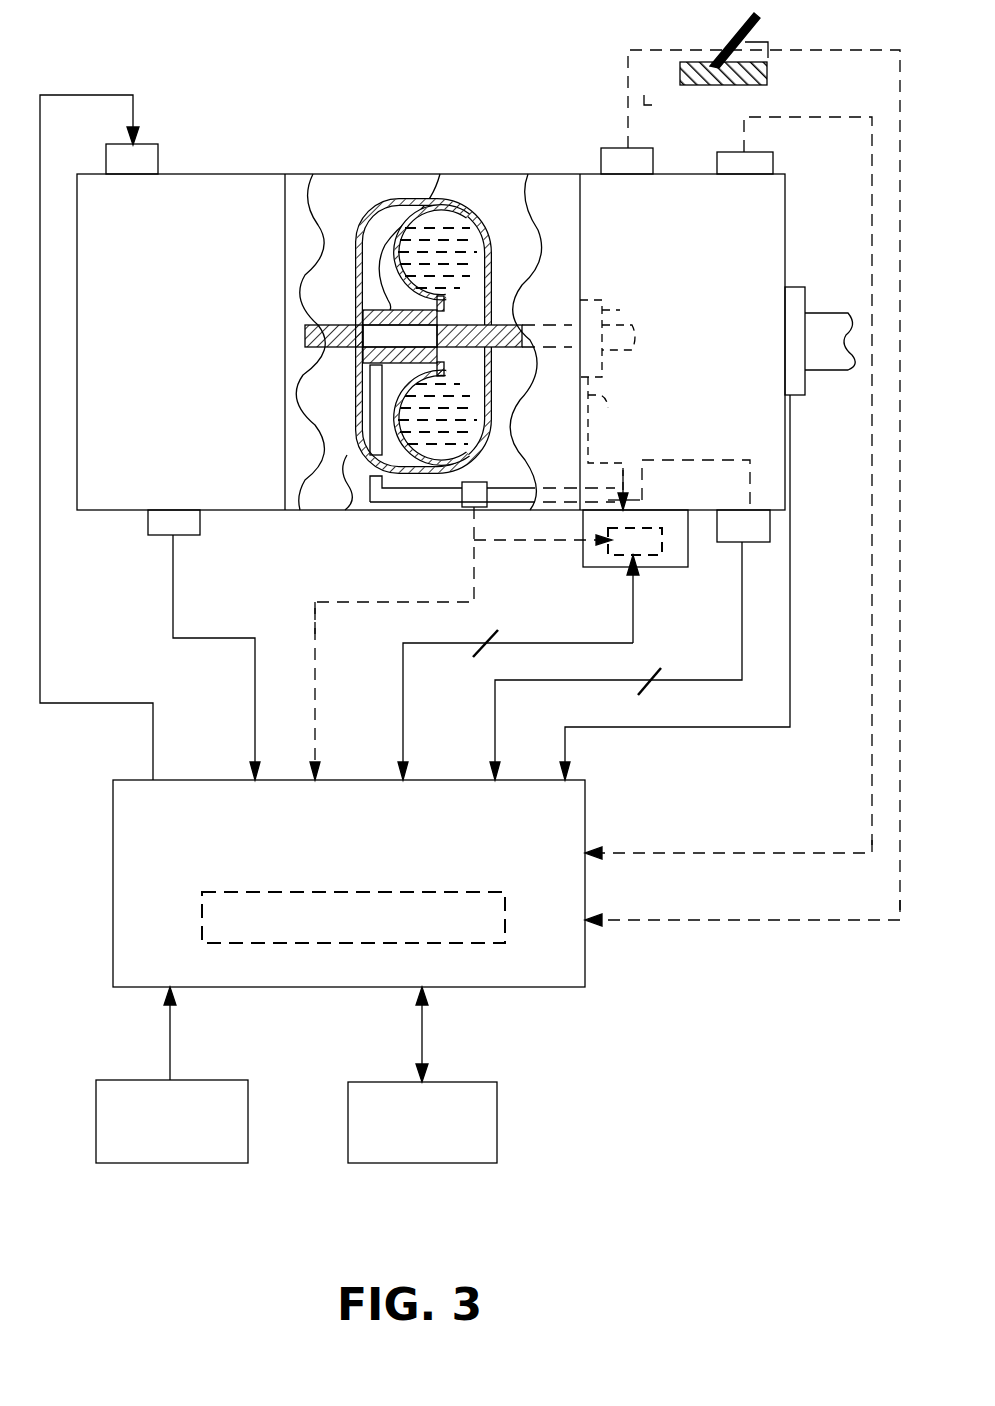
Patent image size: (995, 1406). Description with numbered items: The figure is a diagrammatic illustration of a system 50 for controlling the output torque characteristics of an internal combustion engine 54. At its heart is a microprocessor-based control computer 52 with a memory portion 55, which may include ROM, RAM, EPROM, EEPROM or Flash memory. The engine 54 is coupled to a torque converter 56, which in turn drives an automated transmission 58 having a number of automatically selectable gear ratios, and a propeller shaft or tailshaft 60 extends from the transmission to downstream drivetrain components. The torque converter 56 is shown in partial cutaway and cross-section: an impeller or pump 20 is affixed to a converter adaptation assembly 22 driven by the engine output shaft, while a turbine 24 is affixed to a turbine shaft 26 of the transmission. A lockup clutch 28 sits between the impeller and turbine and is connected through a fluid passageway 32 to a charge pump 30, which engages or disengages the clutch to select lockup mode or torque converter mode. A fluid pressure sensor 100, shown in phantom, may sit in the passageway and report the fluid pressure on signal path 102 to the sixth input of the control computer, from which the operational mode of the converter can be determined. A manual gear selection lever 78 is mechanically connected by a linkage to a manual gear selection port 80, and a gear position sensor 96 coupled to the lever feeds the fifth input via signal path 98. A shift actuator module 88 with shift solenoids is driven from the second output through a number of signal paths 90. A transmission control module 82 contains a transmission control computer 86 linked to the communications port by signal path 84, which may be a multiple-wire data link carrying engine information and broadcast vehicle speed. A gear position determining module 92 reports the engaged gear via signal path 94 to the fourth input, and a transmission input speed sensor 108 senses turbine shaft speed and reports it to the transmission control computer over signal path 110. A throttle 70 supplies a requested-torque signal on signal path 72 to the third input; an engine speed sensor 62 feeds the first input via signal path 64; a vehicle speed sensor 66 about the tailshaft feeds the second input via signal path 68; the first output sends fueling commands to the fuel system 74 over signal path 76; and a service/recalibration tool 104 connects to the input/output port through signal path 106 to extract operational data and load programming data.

The impeller or pump 20 is at (348, 511).
The converter adaptation assembly 22 is at (343, 325).
The turbine 24 is at (407, 200).
The turbine shaft 26 is at (523, 325).
The lockup clutch 28 is at (356, 262).
The charge pump 30 is at (673, 460).
The fluid passageway 32 is at (496, 482).
The system 50 is at (782, 1142).
The control computer 52 is at (113, 878).
The internal combustion engine 54 is at (251, 173).
The memory portion 55 is at (202, 913).
The torque converter 56 is at (348, 173).
The automated transmission 58 is at (786, 188).
The propeller shaft or tailshaft 60 is at (824, 313).
The engine speed sensor 62 is at (148, 528).
The signal path 64 is at (173, 595).
The vehicle speed sensor 66 is at (800, 287).
The signal path 68 is at (790, 695).
The throttle 70 is at (248, 1133).
The signal path 72 is at (170, 1051).
The fuel system 74 is at (158, 160).
The signal path 76 is at (75, 703).
The manual gear selection lever 78 is at (760, 22).
The manual gear selection port 80 is at (613, 148).
The transmission control module 82 is at (635, 576).
The signal path 84 is at (520, 643).
The transmission control computer 86 is at (616, 567).
The shift actuator module 88 is at (725, 543).
The signal paths 90 is at (742, 664).
The gear position determining module 92 is at (722, 152).
The signal path 94 is at (872, 578).
The gear position sensor 96 is at (790, 70).
The signal path 98 is at (697, 921).
The fluid pressure sensor 100 is at (470, 511).
The signal path 102 is at (372, 603).
The service/recalibration tool 104 is at (497, 1136).
The signal path 106 is at (422, 1036).
The transmission input speed sensor 108 is at (630, 300).
The signal path 110 is at (608, 402).